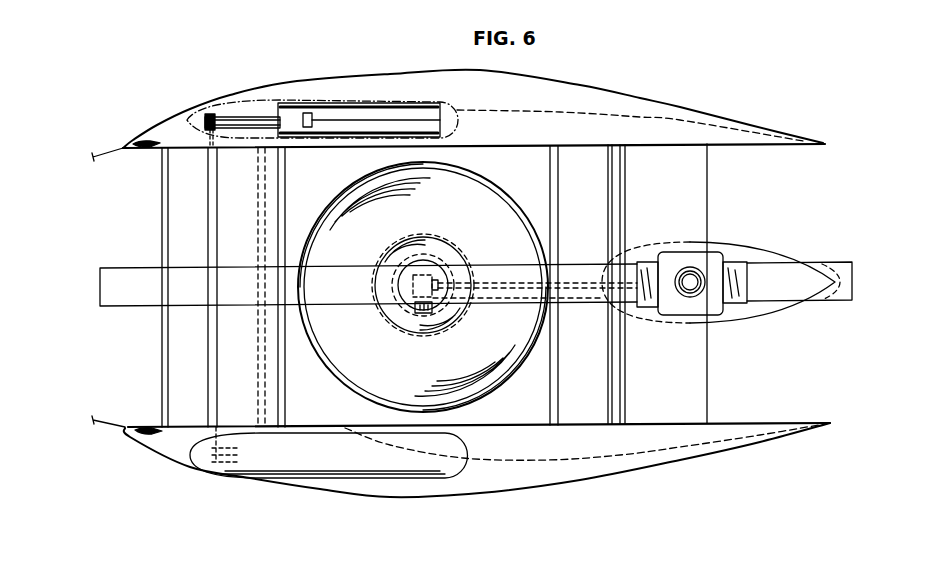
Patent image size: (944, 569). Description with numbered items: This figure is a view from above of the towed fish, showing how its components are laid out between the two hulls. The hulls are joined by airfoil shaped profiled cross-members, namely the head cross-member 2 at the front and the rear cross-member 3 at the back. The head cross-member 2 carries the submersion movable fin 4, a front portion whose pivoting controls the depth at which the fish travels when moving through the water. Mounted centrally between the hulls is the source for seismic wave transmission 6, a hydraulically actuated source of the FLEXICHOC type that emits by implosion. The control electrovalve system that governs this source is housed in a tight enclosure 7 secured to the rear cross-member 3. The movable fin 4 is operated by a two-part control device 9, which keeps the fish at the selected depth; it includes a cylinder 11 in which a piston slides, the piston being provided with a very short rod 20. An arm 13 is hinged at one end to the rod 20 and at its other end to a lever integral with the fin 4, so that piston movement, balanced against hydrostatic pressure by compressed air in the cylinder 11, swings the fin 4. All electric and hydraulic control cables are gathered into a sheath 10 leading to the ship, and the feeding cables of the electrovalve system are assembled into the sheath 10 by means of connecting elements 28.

The head cross-member 2 is at (185, 190).
The rear cross-member 3 is at (678, 379).
The submersion movable fin 4 is at (245, 330).
The source for seismic wave transmission 6 is at (466, 343).
The tight enclosure 7 is at (758, 305).
The control device 9 is at (253, 100).
The sheath 10 is at (130, 285).
The cylinder 11 is at (385, 117).
The arm 13 is at (228, 115).
The rod 20 is at (327, 118).
The connecting elements 28 is at (712, 262).